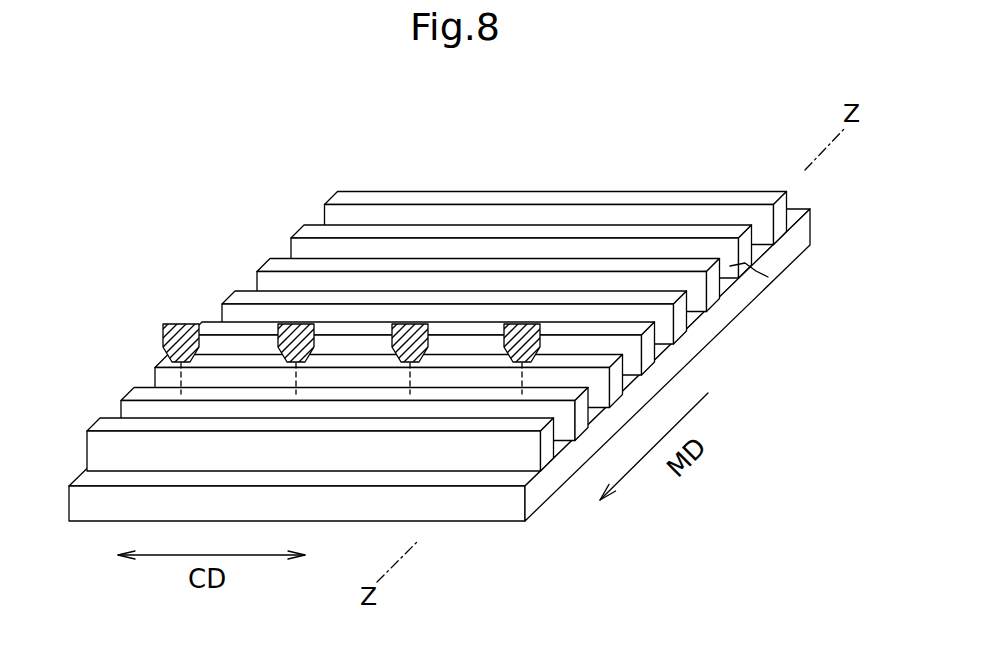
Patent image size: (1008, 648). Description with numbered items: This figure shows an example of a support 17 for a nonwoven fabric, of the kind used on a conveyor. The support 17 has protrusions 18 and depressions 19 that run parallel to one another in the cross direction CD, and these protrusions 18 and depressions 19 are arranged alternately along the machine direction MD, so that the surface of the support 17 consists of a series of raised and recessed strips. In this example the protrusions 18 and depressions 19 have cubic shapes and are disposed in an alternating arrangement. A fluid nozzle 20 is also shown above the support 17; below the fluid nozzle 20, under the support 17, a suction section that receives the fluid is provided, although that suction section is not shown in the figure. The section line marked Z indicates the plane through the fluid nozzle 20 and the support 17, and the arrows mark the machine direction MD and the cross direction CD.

The support 17 is at (479, 305).
The protrusions 18 is at (783, 204).
The depressions 19 is at (730, 267).
The fluid nozzle 20 is at (172, 331).